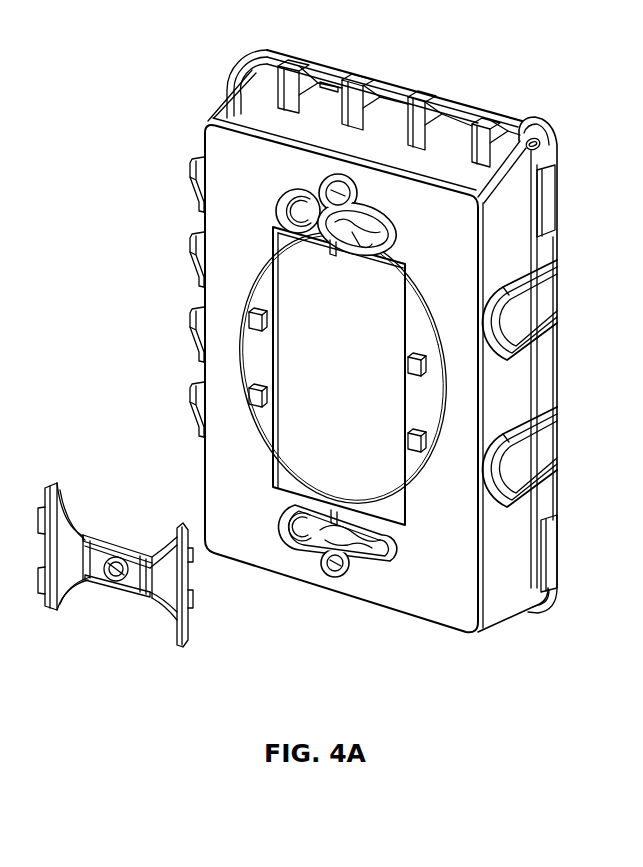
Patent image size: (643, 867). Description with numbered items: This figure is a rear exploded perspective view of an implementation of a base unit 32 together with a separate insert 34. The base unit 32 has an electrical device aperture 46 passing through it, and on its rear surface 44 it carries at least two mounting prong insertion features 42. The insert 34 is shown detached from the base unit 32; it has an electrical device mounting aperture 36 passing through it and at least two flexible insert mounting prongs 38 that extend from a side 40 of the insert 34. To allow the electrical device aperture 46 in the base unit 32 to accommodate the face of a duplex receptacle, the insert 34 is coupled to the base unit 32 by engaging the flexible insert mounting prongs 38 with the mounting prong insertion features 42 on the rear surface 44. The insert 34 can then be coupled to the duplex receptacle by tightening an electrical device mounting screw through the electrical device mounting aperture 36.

The base unit 32 is at (543, 131).
The insert 34 is at (131, 597).
The electrical device mounting aperture 36 is at (109, 566).
The flexible insert mounting prongs 38 is at (190, 567).
The side 40 is at (184, 583).
The mounting prong insertion features 42 is at (415, 364).
The rear surface 44 is at (417, 573).
The electrical device aperture 46 is at (326, 331).